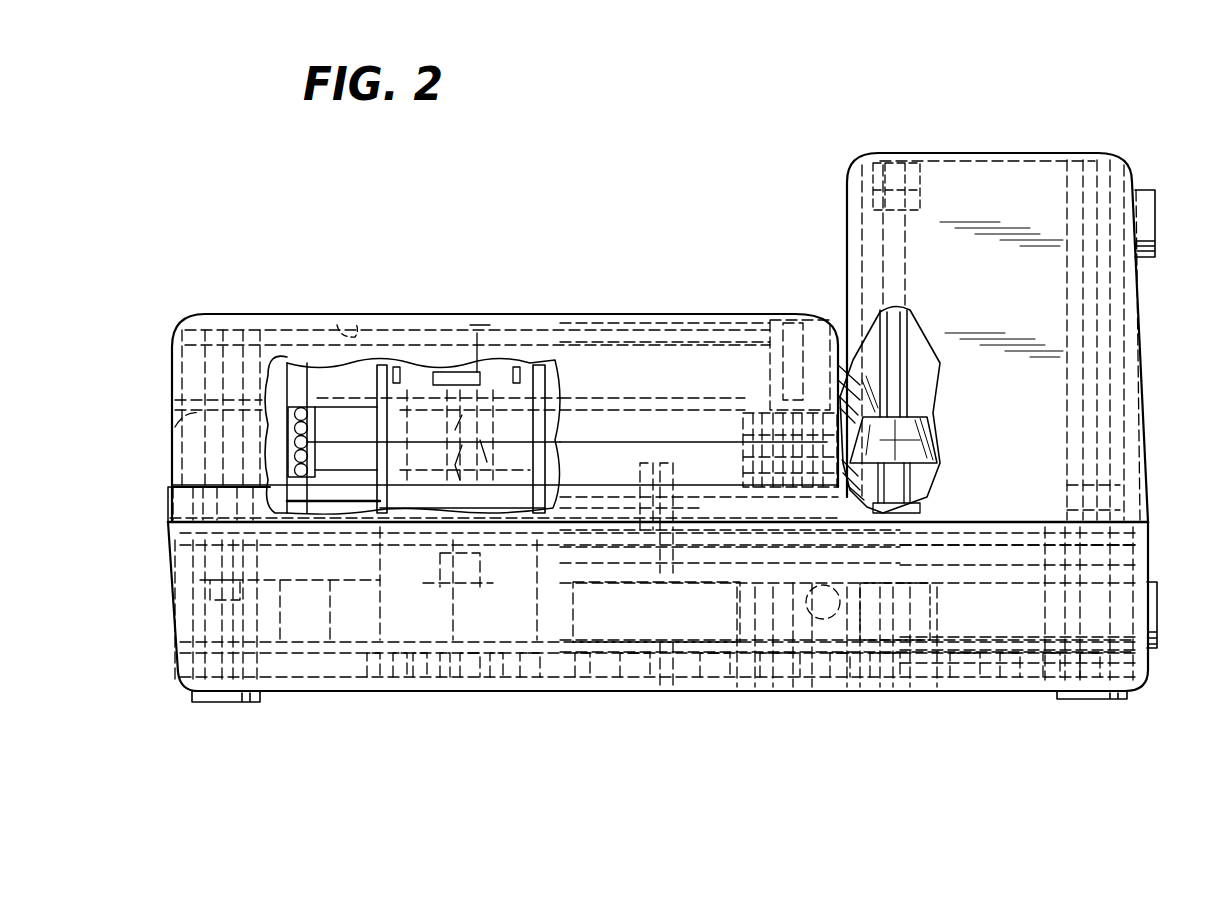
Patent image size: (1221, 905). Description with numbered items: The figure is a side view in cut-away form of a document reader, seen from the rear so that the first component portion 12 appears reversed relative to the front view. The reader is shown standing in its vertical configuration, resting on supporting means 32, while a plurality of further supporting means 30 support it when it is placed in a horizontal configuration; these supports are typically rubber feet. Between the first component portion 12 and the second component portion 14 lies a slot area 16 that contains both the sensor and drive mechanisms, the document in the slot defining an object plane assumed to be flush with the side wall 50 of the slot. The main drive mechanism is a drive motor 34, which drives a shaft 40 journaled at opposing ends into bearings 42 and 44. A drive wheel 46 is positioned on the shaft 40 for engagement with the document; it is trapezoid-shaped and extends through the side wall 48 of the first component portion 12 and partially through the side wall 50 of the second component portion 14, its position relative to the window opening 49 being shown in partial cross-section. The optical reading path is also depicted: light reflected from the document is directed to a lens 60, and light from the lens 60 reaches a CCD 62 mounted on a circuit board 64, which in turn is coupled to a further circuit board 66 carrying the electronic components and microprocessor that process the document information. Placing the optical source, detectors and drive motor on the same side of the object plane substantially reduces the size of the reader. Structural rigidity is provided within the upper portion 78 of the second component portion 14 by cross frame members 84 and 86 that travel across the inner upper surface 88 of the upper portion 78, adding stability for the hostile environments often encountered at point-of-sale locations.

The first component portion 12 is at (937, 153).
The second component portion 14 is at (170, 604).
The slot area 16 is at (838, 300).
The supporting means 30 is at (1155, 222).
The supporting means 32 is at (217, 703).
The drive motor 34 is at (400, 425).
The shaft 40 is at (915, 328).
The bearing 42 is at (901, 147).
The bearing 44 is at (892, 686).
The drive wheel 46 is at (937, 441).
The side wall 48 is at (846, 190).
The window opening 49 is at (863, 412).
The side wall 50 is at (847, 320).
The lens 60 is at (480, 451).
The CCD 62 is at (317, 423).
The circuit board 64 is at (287, 363).
The circuit board 66 is at (323, 694).
The upper portion 78 is at (182, 334).
The cross frame member 84 is at (670, 342).
The cross frame member 86 is at (475, 333).
The inner upper surface 88 is at (343, 314).